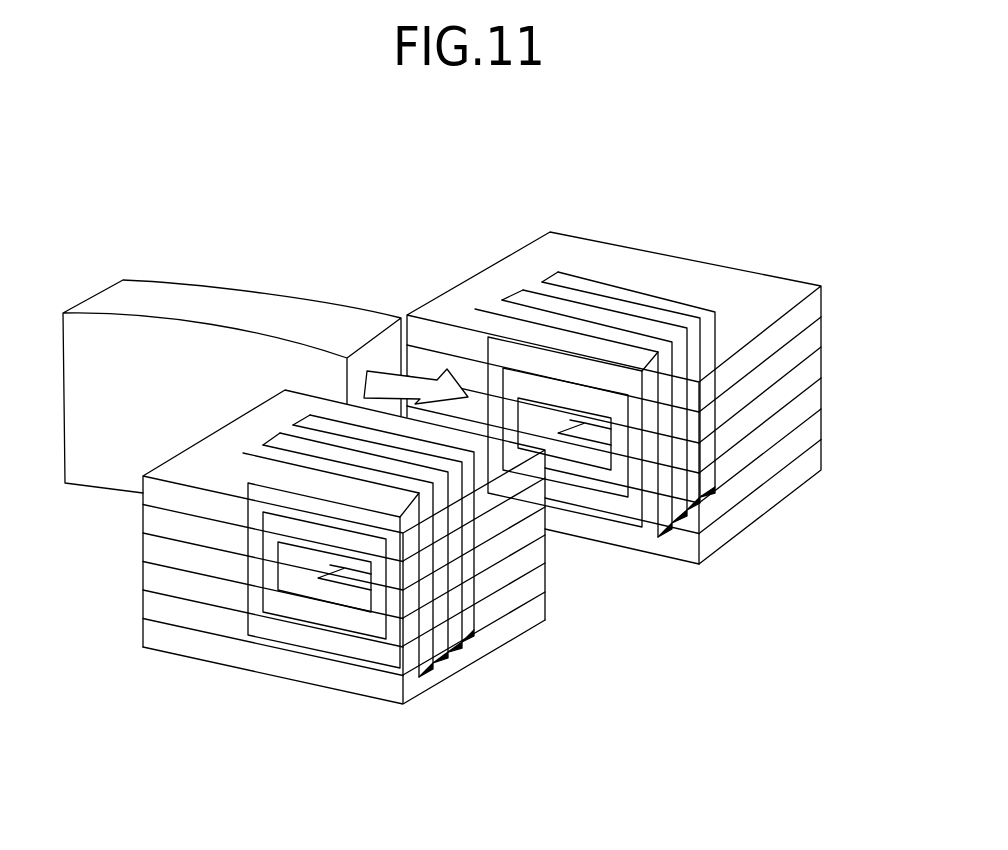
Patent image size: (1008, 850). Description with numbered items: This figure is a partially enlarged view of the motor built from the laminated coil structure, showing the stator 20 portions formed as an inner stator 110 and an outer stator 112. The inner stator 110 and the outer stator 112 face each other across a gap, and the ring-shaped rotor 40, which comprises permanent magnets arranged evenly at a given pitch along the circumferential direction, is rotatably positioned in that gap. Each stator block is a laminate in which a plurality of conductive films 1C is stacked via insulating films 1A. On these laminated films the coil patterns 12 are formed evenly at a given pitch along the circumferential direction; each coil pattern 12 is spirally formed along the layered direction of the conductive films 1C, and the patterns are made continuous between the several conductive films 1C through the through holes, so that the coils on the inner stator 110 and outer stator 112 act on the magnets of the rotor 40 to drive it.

The rotor 40 is at (130, 355).
The coil pattern 12 is at (477, 618).
The insulating film 1A is at (157, 492).
The conductive film 1C is at (175, 512).
The outer stator 112 is at (747, 523).
The inner stator 110 is at (428, 693).
The stator 20 is at (222, 670).